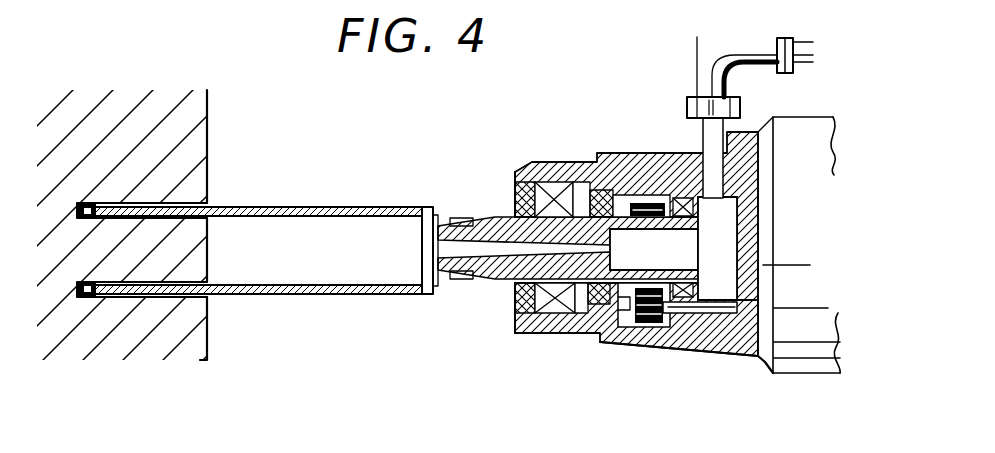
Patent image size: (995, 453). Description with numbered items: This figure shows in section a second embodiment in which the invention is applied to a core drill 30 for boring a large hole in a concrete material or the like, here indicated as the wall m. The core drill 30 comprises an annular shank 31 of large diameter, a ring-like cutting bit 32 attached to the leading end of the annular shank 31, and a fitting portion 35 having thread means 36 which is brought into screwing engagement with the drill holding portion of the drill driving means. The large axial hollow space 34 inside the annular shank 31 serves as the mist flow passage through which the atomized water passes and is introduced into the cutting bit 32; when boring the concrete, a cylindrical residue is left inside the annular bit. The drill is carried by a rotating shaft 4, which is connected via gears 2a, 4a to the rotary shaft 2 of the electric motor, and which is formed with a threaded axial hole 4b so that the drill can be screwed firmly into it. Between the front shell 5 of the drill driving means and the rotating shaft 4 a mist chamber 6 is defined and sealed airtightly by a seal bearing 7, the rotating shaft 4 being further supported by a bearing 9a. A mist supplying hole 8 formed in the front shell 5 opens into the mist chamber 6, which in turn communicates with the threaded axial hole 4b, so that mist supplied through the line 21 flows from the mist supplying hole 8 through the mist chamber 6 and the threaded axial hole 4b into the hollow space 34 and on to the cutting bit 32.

The wall m is at (175, 145).
The core drill 30 is at (343, 295).
The annular shank 31 is at (325, 207).
The ring-like cutting bit 32 is at (85, 298).
The axial hollow space 34 is at (292, 258).
The fitting portion 35 is at (487, 224).
The thread means 36 is at (583, 294).
The front shell 5 is at (533, 328).
The bearing 9a is at (517, 313).
The seal bearing 7 is at (585, 316).
The rotating shaft 4 is at (642, 245).
The gear 4a is at (643, 322).
The threaded axial hole 4b is at (618, 195).
The rotary shaft 2 is at (715, 323).
The gear 2a is at (655, 325).
The mist chamber 6 is at (718, 223).
The mist supplying hole 8 is at (710, 180).
The cable 21 is at (706, 68).